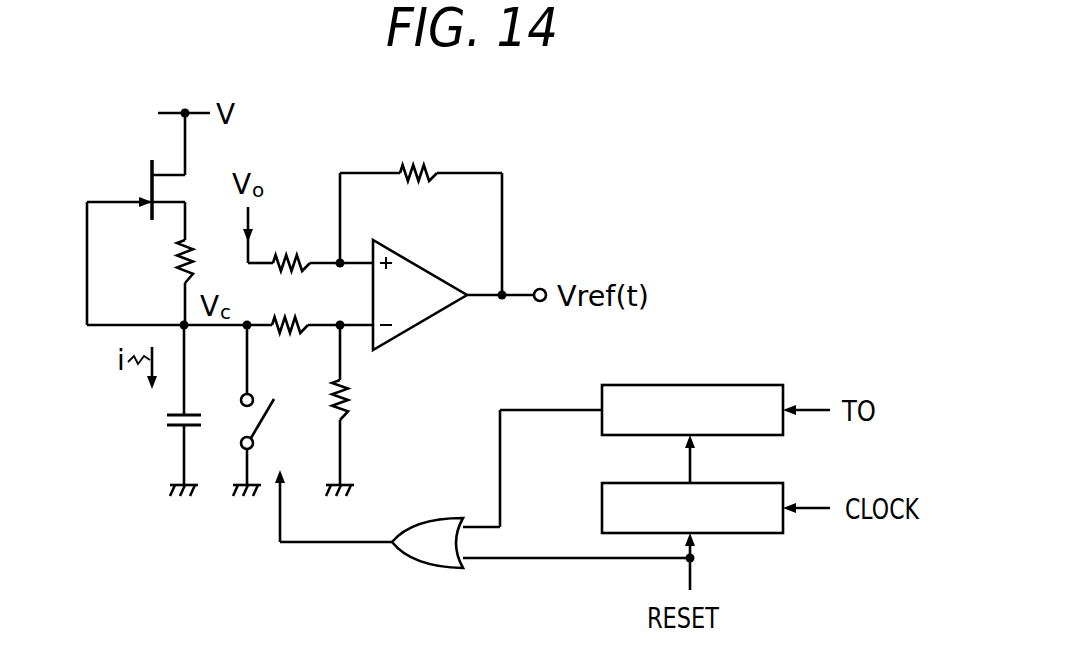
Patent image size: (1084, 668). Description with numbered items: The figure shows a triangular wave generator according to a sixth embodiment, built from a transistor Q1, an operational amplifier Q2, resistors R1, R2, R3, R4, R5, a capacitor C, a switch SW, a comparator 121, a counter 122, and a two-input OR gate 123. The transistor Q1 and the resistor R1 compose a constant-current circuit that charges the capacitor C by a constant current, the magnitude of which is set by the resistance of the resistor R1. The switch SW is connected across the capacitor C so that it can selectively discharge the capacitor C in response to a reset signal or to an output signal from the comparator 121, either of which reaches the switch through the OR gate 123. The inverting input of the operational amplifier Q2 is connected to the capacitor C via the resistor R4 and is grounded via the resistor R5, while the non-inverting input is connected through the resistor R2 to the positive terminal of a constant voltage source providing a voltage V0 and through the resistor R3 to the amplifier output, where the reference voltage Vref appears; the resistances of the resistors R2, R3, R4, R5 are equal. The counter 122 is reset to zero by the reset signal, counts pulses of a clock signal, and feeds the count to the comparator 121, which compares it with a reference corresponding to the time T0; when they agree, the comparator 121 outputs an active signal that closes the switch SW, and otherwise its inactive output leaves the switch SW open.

The transistor Q1 is at (136, 177).
The resistor R1 is at (153, 261).
The resistor R2 is at (293, 233).
The resistor R3 is at (421, 199).
The resistor R4 is at (313, 307).
The resistor R5 is at (369, 410).
The operational amplifier Q2 is at (421, 287).
The capacitor C is at (158, 410).
The switch SW is at (270, 410).
The comparator 121 is at (701, 390).
The counter 122 is at (702, 491).
The two-input OR gate 123 is at (377, 517).